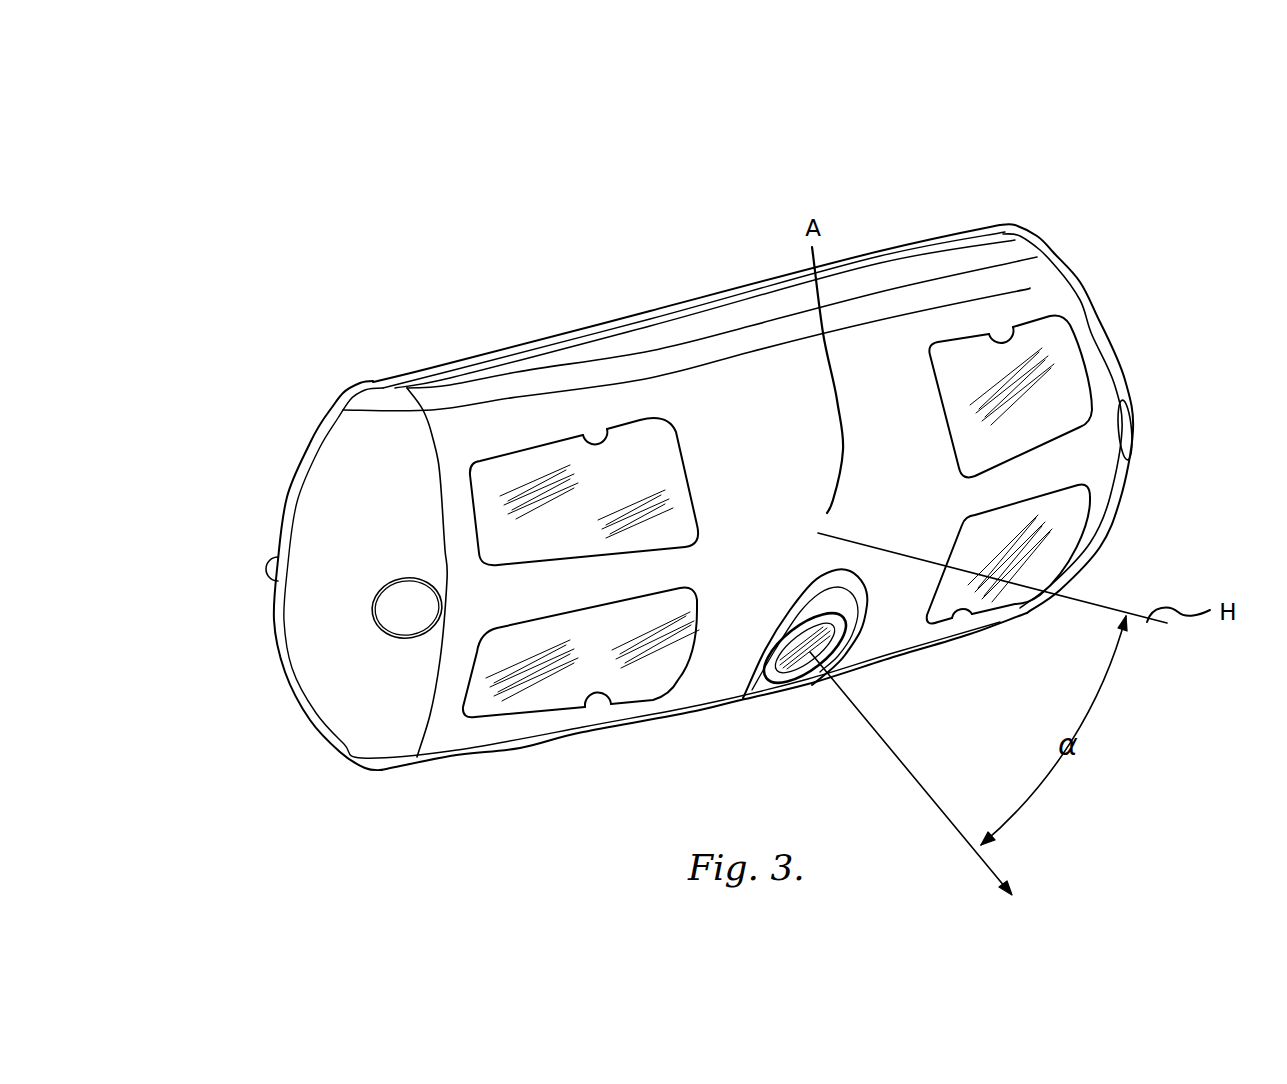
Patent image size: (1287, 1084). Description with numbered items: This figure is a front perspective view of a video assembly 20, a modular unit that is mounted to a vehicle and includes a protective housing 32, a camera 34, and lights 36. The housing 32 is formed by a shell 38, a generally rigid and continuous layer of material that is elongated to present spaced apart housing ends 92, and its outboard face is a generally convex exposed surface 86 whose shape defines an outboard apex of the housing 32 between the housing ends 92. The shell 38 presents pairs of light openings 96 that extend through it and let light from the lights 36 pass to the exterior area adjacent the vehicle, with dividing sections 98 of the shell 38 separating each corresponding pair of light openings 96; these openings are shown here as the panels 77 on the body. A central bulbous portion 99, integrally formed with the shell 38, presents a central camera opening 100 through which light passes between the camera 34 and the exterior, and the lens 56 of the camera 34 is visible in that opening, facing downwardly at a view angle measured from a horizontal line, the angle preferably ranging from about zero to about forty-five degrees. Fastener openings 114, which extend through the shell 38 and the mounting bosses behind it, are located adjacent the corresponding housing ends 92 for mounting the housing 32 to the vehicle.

The video assembly 20 is at (1113, 187).
The housing 32 is at (1080, 293).
The camera 34 is at (793, 670).
The lights 36 is at (494, 708).
The shell 38 is at (1102, 480).
The lens 56 is at (783, 678).
The upper panel 77 is at (497, 470).
The exposed surface 86 is at (757, 377).
The housing ends 92 is at (1152, 311).
The light openings 96 is at (594, 437).
The dividing sections 98 is at (547, 601).
The central bulbous portion 99 is at (833, 603).
The central camera opening 100 is at (835, 643).
The fastener openings 114 is at (400, 615).